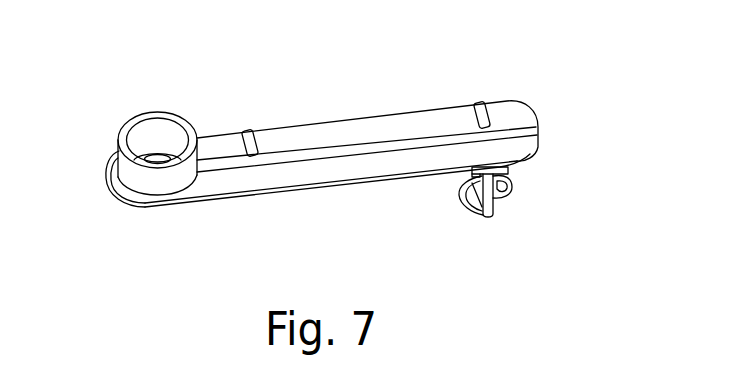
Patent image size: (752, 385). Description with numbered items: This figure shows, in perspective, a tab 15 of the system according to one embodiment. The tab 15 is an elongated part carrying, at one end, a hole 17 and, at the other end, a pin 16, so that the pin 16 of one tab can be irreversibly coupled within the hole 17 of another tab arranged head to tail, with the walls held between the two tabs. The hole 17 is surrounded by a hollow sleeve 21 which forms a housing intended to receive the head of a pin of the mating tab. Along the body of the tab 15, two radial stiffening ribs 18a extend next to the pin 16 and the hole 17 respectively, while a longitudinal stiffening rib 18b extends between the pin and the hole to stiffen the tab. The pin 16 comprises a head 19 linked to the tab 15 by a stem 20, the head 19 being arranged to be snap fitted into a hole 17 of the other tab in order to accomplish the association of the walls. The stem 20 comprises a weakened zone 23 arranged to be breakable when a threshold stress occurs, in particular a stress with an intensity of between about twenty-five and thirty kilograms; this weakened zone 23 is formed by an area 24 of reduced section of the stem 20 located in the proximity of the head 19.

The tab 15 is at (394, 84).
The pin 16 is at (512, 197).
The hole 17 is at (157, 155).
The radial stiffening ribs 18a is at (250, 131).
The longitudinal stiffening rib 18b is at (322, 155).
The head 19 is at (502, 186).
The stem 20 is at (468, 178).
The hollow sleeve 21 is at (129, 125).
The weakened zone 23 is at (508, 177).
The area of reduced section 24 is at (482, 195).